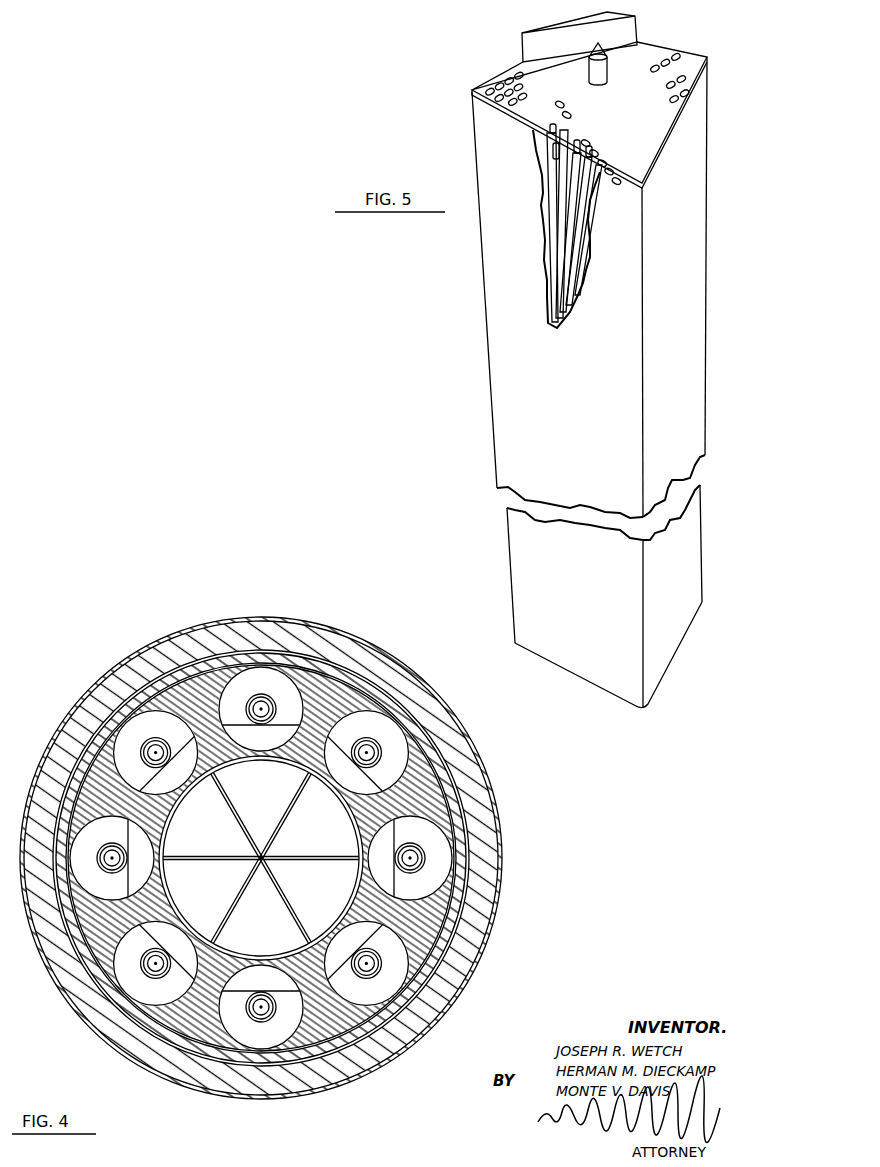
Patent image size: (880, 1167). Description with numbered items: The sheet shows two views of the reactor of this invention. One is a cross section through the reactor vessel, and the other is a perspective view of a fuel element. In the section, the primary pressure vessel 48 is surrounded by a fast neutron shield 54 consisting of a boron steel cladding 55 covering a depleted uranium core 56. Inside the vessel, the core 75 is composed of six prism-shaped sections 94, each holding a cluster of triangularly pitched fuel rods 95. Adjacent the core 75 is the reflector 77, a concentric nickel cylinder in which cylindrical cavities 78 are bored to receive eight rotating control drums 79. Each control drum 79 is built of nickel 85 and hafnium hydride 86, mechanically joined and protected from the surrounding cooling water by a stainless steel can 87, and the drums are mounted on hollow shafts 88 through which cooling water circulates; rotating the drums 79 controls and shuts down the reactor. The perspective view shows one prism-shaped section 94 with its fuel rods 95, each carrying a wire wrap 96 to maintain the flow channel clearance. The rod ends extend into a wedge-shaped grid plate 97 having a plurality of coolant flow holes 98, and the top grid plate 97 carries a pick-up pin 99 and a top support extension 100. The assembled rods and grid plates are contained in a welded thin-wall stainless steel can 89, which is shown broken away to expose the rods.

In FIG. 4, the fast neutron shield 54 is at (462, 711).
In FIG. 4, the control drums 79 is at (435, 1014).
In FIG. 4, the depleted uranium core 56 is at (470, 810).
In FIG. 4, the boron steel cladding 55 is at (466, 843).
In FIG. 4, the primary pressure vessel 48 is at (447, 792).
In FIG. 4, the stainless steel can 87 is at (450, 874).
In FIG. 4, the reflector 77 is at (422, 930).
In FIG. 4, the core 75 is at (261, 858).
In FIG. 4, the hollow shafts 88 is at (364, 740).
In FIG. 4, the hafnium hydride 86 is at (261, 979).
In FIG. 4, the nickel 85 is at (257, 1018).
In FIG. 4, the cylindrical cavities 78 is at (390, 988).
In FIG. 5, the prism-shaped sections 94 is at (510, 378).
In FIG. 5, the grid plate 97 is at (687, 58).
In FIG. 5, the top support extension 100 is at (532, 38).
In FIG. 5, the pick-up pin 99 is at (597, 50).
In FIG. 5, the coolant flow holes 98 is at (490, 82).
In FIG. 5, the stainless steel can 89 is at (543, 242).
In FIG. 5, the wire wrap 96 is at (548, 295).
In FIG. 5, the fuel rods 95 is at (577, 213).